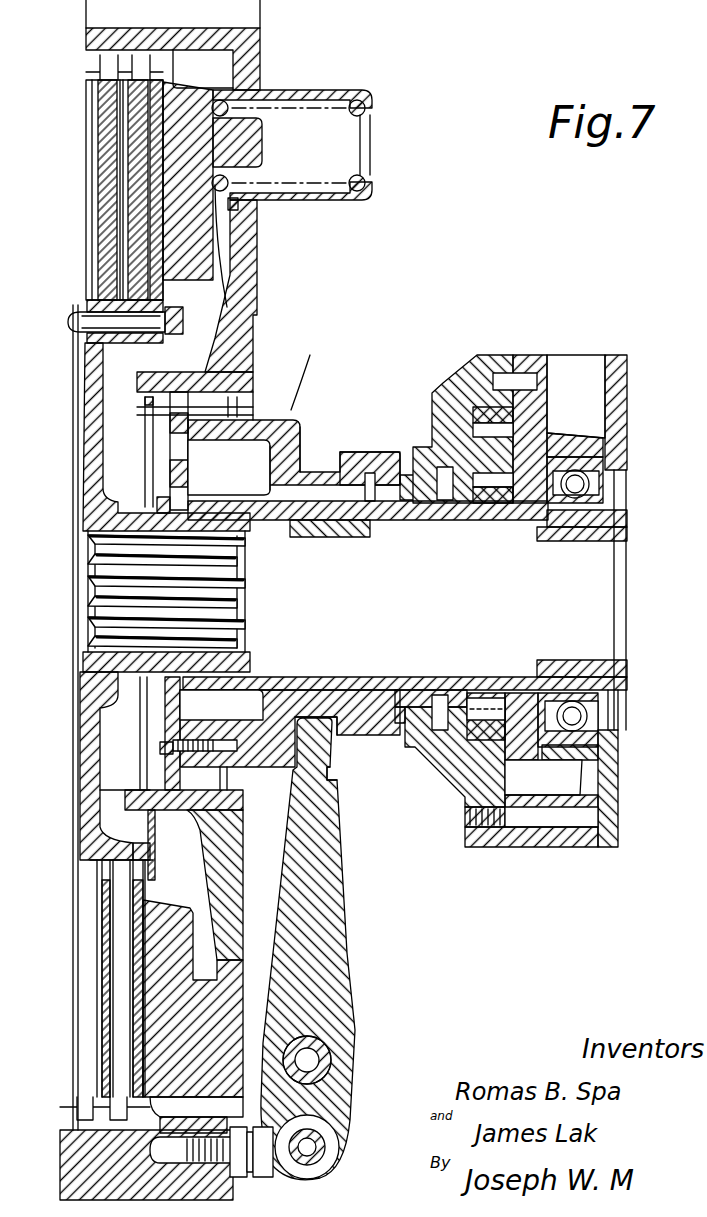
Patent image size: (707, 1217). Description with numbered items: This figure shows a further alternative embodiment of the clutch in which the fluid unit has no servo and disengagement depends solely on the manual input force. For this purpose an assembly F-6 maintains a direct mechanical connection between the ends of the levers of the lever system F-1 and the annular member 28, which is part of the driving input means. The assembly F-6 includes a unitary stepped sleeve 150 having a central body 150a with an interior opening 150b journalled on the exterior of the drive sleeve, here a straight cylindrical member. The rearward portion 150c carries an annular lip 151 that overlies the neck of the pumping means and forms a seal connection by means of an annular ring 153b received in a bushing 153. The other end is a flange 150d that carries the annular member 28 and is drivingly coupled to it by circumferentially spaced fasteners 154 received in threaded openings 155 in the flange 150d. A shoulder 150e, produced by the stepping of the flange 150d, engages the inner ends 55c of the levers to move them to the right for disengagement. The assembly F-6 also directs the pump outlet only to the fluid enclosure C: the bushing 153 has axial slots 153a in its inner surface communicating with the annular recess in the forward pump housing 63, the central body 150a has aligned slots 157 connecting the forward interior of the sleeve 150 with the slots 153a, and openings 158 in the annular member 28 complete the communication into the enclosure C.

The flange 150d is at (197, 427).
The openings 158 is at (177, 470).
The fluid enclosure C is at (124, 376).
The unitary stepped sleeve 150 is at (311, 416).
The central body 150a is at (268, 473).
The rearward portion 150c is at (335, 470).
The annular lip 151 is at (372, 470).
The forward pump housing 63 is at (440, 396).
The axial slots 153a is at (410, 505).
The aligned slots 157 is at (321, 504).
The interior opening 150b is at (324, 675).
The annular ring 153b is at (381, 690).
The bushing 153 is at (427, 676).
The annular member 28 is at (167, 713).
The threaded openings 155 is at (207, 740).
The fasteners 154 is at (163, 748).
The inner end of lever 55c is at (338, 755).
The shoulder 150e is at (335, 780).
The assembly F-6 is at (291, 410).
The lever system F-1 is at (352, 920).